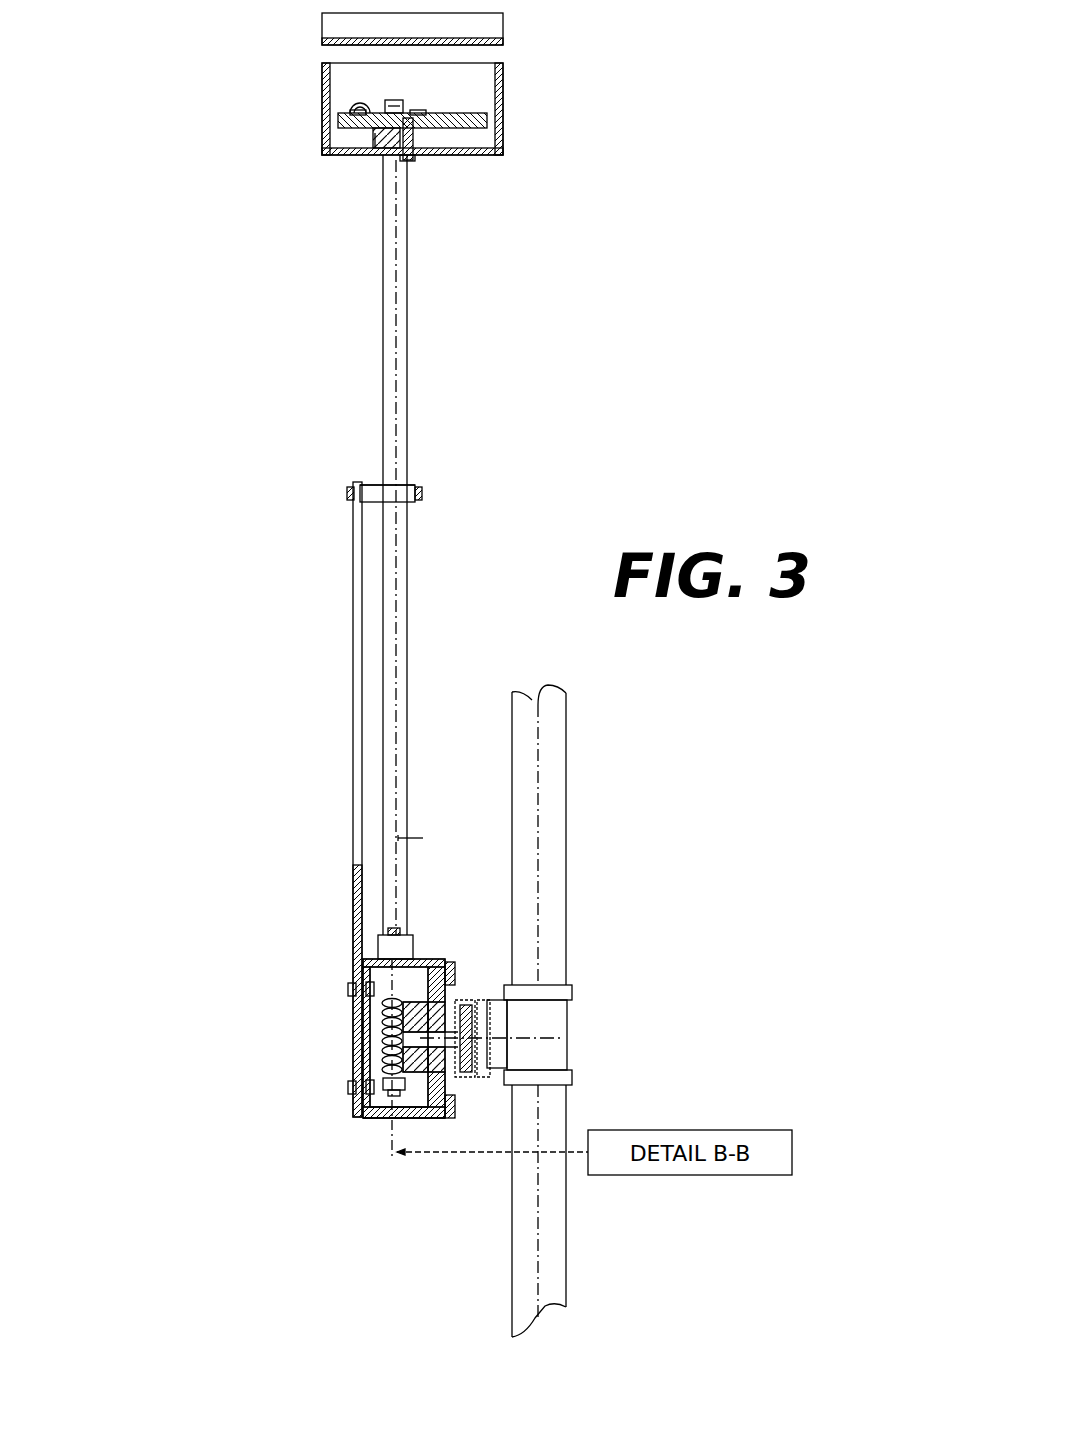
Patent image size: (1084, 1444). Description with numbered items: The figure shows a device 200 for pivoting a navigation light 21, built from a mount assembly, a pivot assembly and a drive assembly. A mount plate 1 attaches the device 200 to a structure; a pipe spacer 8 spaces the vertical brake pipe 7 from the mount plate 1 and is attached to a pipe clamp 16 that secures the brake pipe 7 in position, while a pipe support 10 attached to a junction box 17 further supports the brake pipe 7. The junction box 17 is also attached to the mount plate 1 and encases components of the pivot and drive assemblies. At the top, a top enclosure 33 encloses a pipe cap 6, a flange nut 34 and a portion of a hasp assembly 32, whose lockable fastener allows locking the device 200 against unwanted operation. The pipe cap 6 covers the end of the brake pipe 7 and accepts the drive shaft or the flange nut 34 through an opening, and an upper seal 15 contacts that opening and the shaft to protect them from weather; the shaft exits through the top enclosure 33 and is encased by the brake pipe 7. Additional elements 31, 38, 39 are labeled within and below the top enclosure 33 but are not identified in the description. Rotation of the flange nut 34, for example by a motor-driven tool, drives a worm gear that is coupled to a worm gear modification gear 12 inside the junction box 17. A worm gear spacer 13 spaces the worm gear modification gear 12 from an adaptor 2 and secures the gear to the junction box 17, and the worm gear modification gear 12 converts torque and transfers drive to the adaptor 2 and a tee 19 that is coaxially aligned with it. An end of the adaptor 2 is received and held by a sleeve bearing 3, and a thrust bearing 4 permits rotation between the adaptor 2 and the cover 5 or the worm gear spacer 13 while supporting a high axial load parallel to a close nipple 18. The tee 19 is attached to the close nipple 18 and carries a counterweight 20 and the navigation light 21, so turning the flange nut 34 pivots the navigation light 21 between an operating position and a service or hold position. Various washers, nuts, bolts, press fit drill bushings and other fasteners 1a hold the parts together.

The mount plate 1 is at (352, 727).
The press fit drill bushing(s) / fasteners 1a is at (423, 494).
The adaptor 2 is at (455, 1063).
The sleeve bearing 3 is at (440, 1002).
The thrust bearing 4 is at (481, 918).
The cover 5 is at (438, 1120).
The pipe cap 6 is at (375, 146).
The brake pipe 7 is at (382, 270).
The pipe spacer 8 is at (370, 483).
The pipe support 10 is at (415, 940).
The worm gear modification gear 12 is at (385, 1058).
The worm gear spacer 13 is at (420, 1070).
The upper seal 15 is at (373, 133).
The pipe clamp 16 is at (405, 483).
The junction box 17 is at (412, 1118).
The close nipple 18 is at (606, 962).
The tee 19 is at (545, 1012).
The counterweight 20 is at (555, 848).
The navigation light 21 is at (525, 1240).
The shaft 31 is at (417, 160).
The hasp assembly 32 is at (488, 120).
The top enclosure 33 is at (507, 142).
The flange nut 34 is at (385, 98).
The nut 38 is at (417, 115).
The loop 39 is at (350, 103).
The device 200 is at (703, 1265).